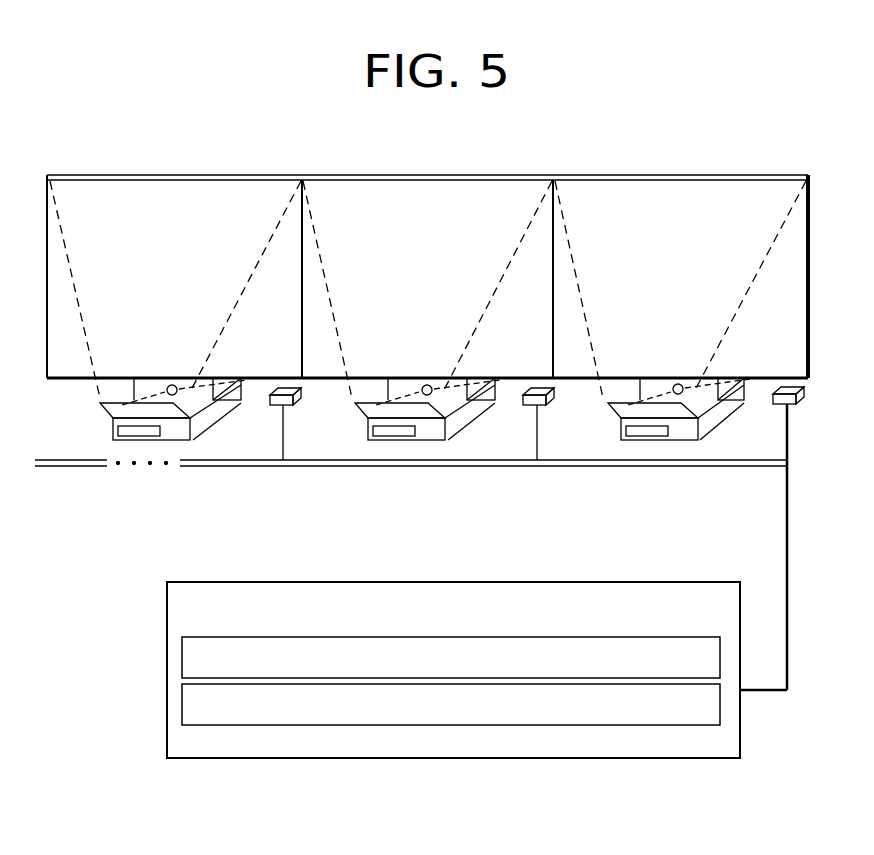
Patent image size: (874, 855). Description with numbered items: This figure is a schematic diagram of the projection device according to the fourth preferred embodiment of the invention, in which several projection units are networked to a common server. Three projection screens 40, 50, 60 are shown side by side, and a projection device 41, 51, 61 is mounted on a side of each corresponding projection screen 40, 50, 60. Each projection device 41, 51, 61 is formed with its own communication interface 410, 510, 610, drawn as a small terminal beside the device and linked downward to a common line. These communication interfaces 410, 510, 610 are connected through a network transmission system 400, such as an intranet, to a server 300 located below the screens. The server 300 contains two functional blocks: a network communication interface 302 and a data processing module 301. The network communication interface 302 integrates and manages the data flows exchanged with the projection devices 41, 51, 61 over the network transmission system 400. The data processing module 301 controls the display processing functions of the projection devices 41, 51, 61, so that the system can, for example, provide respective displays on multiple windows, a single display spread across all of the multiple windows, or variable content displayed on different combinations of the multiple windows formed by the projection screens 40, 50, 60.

The projection screen 40 is at (711, 309).
The projection screen 50 is at (428, 322).
The projection screen 60 is at (174, 325).
The projection device 41 is at (673, 440).
The projection device 51 is at (420, 440).
The projection device 61 is at (180, 441).
The communication interface 410 is at (747, 395).
The communication interface 510 is at (487, 403).
The communication interface 610 is at (240, 402).
The network transmission system 400 is at (352, 466).
The server 300 is at (411, 717).
The data processing module 301 is at (167, 705).
The network communication interface 302 is at (167, 660).